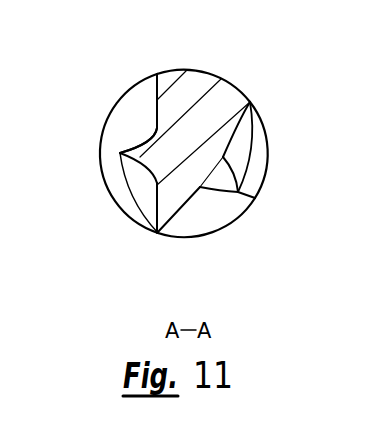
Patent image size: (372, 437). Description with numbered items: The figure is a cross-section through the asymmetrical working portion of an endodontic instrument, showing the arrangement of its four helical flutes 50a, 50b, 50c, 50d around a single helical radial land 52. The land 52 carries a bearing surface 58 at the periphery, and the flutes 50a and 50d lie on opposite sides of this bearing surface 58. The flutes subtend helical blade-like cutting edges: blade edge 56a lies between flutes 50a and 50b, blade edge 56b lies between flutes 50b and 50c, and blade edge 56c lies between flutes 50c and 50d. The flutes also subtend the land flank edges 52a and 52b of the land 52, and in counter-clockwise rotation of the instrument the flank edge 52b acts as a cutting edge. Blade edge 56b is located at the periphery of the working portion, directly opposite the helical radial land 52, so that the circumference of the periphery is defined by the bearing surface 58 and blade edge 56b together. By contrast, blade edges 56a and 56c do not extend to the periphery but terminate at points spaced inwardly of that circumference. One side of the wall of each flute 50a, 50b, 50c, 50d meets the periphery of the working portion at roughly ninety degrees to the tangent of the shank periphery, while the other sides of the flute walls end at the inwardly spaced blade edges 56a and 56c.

The helical flute 50a is at (130, 102).
The helical flute 50b is at (118, 190).
The helical flute 50c is at (205, 226).
The helical flute 50d is at (250, 157).
The helical radial land 52 is at (198, 78).
The land flank edge 52a is at (157, 73).
The land flank edge 52b is at (250, 102).
The helical blade-like cutting edge 56a is at (120, 153).
The helical blade-like cutting edge 56b is at (158, 233).
The helical blade-like cutting edge 56c is at (255, 198).
The bearing surface 58 is at (238, 86).